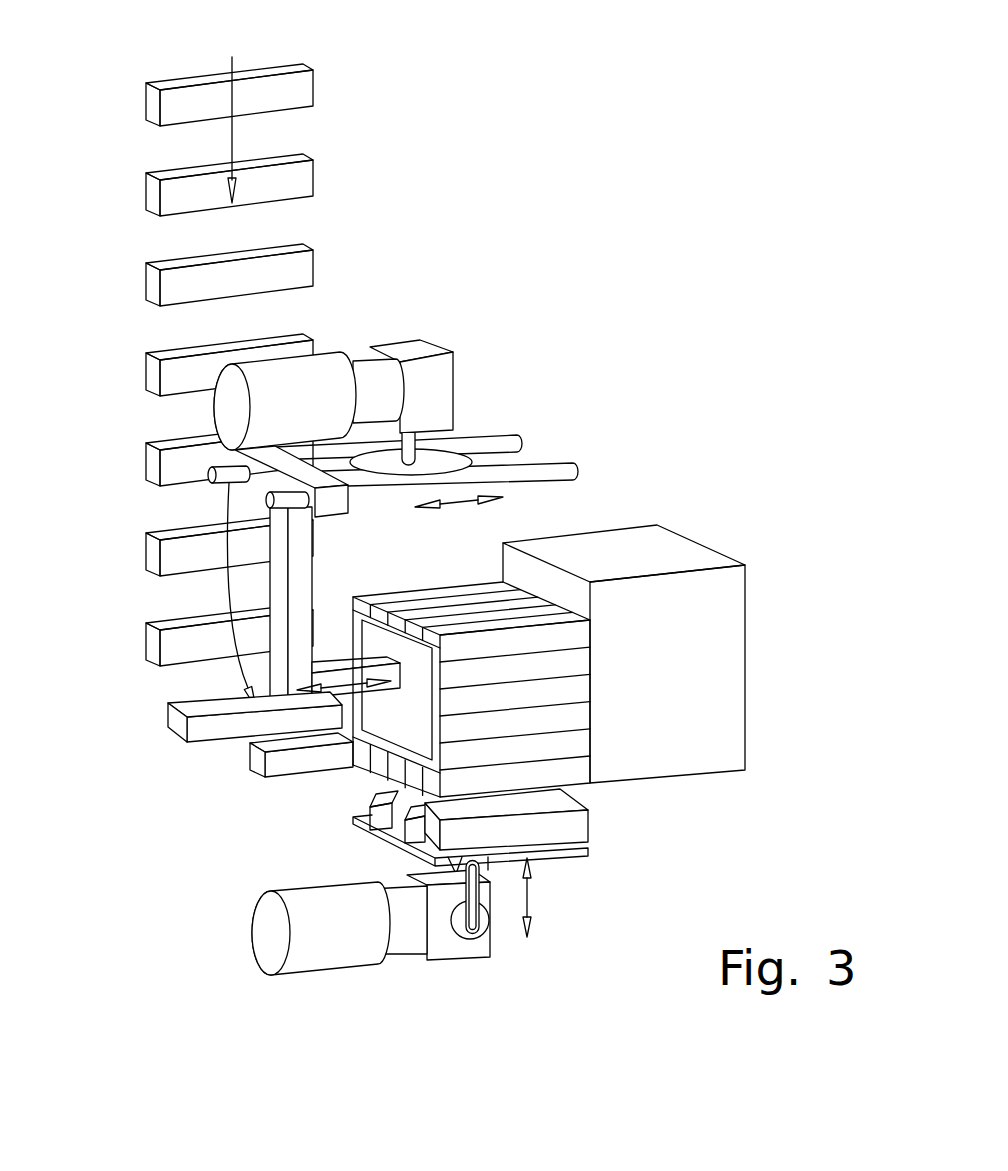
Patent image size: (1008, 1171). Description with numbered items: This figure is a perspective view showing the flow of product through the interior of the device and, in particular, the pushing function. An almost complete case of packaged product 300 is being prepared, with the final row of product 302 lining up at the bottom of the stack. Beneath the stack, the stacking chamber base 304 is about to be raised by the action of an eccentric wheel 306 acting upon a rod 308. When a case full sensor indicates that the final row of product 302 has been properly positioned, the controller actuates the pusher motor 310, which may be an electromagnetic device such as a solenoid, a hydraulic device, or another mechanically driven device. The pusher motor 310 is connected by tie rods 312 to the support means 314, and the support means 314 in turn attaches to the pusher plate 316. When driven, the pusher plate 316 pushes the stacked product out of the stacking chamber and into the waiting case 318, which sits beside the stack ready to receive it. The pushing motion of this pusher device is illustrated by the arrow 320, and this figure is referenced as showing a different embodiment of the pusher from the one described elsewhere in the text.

The case of packaged product 300 is at (573, 775).
The final row of product 302 is at (573, 827).
The stacking chamber base 304 is at (545, 853).
The eccentric wheel 306 is at (470, 938).
The rod 308 is at (478, 897).
The pusher motor 310 is at (313, 367).
The tie rods 312 is at (546, 462).
The support means 314 is at (298, 568).
The pusher plate 316 is at (417, 733).
The waiting case 318 is at (718, 684).
The arrow 320 is at (346, 690).